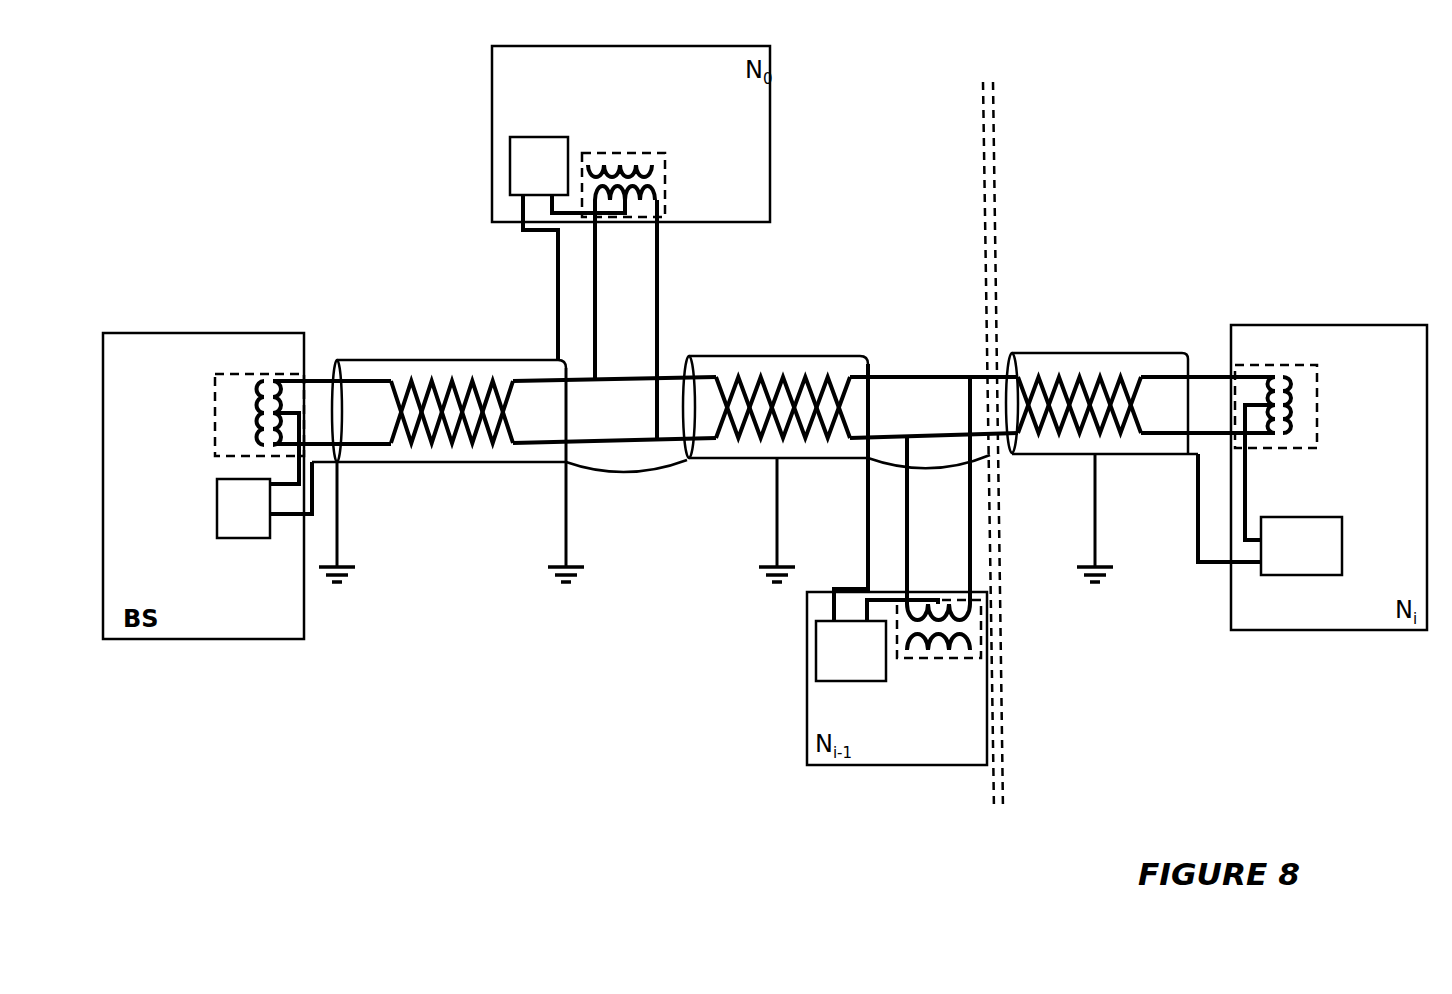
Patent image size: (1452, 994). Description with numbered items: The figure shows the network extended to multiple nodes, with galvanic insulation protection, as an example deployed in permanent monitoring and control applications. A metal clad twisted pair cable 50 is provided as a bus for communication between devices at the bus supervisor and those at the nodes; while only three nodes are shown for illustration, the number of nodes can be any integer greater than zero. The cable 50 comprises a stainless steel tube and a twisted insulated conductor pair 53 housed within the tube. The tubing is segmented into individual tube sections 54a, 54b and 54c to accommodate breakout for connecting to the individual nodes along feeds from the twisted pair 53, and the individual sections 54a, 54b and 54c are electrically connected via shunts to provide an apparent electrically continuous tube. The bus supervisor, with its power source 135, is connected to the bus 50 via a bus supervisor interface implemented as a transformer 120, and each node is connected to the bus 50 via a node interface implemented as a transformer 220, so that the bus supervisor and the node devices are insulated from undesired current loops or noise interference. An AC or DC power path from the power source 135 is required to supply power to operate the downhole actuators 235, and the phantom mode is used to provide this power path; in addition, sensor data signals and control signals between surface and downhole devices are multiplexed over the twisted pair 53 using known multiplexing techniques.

The metal clad twisted pair cable 50 is at (324, 272).
The transformer 120 is at (259, 403).
The power source 135 is at (243, 508).
The twisted insulated conductor pair 53 is at (587, 435).
The tube section 54a is at (483, 463).
The tube section 54b is at (723, 462).
The tube section 54c is at (1143, 353).
The transformer 220 is at (949, 405).
The downhole actuator 235 is at (926, 409).